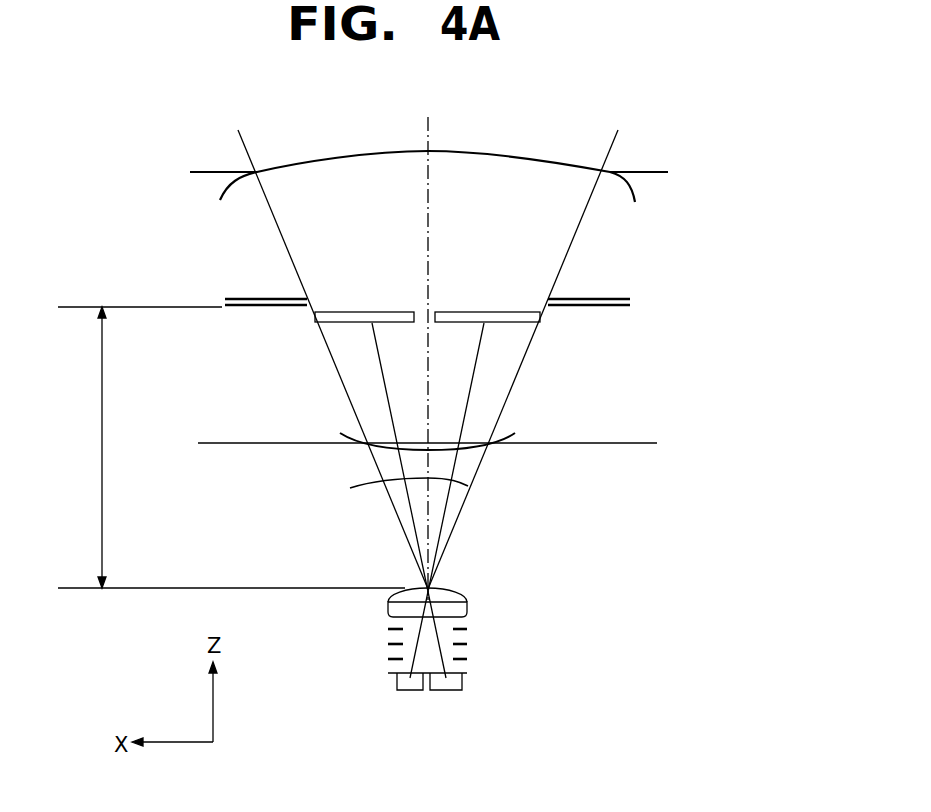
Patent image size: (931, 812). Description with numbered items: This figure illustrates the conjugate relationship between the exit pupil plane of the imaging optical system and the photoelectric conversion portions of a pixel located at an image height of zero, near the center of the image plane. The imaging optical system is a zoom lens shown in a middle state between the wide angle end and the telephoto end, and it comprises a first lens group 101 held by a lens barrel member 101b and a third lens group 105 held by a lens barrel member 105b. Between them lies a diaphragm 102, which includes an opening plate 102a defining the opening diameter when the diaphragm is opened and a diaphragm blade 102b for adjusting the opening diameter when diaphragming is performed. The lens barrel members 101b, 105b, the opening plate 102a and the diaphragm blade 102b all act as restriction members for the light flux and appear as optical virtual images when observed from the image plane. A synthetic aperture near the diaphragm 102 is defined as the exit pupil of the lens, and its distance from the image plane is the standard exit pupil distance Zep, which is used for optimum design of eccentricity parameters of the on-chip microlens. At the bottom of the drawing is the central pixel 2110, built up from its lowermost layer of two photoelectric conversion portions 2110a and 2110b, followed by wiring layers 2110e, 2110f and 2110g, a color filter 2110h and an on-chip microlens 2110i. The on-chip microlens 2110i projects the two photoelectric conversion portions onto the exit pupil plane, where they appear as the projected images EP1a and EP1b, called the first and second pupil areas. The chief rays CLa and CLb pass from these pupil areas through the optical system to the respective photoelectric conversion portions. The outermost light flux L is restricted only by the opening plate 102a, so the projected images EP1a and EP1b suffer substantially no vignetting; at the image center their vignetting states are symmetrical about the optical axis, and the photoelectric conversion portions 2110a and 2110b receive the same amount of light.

The first lens group 101 is at (502, 154).
The lens barrel member 101b is at (643, 170).
The diaphragm 102 is at (500, 288).
The opening plate 102a is at (607, 308).
The diaphragm blade 102b is at (568, 298).
The third lens group 105 is at (478, 450).
The lens barrel member 105b is at (620, 441).
The pixel 2110 is at (497, 650).
The photoelectric conversion portion 2110a is at (450, 690).
The photoelectric conversion portion 2110b is at (400, 690).
The wiring layer 2110e is at (463, 662).
The wiring layer 2110f is at (465, 645).
The wiring layer 2110g is at (463, 630).
The color filter 2110h is at (467, 610).
The on-chip microlens 2110i is at (455, 592).
The projected image EP1a is at (390, 313).
The projected image EP1b is at (473, 312).
The chief ray a CLa is at (382, 381).
The chief ray b CLb is at (482, 383).
The light flux L is at (375, 468).
The exit pupil distance Zep is at (80, 447).